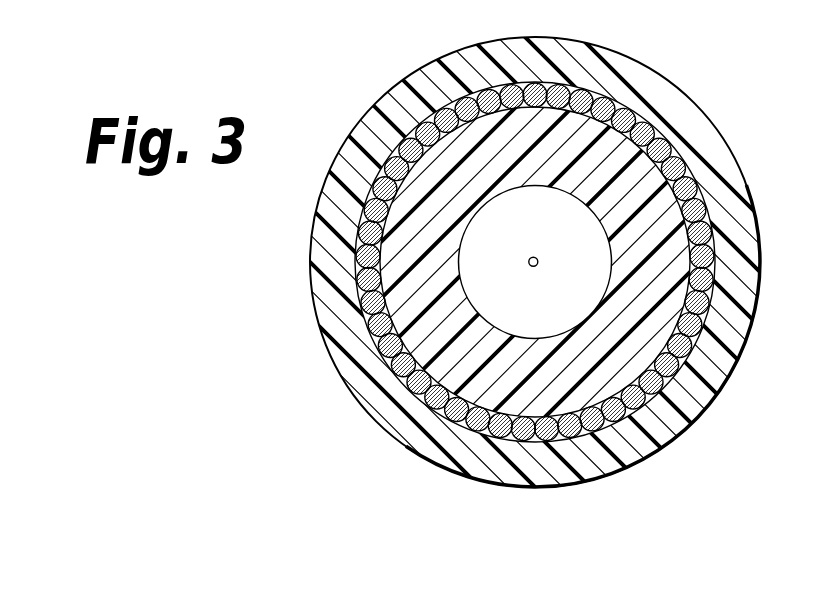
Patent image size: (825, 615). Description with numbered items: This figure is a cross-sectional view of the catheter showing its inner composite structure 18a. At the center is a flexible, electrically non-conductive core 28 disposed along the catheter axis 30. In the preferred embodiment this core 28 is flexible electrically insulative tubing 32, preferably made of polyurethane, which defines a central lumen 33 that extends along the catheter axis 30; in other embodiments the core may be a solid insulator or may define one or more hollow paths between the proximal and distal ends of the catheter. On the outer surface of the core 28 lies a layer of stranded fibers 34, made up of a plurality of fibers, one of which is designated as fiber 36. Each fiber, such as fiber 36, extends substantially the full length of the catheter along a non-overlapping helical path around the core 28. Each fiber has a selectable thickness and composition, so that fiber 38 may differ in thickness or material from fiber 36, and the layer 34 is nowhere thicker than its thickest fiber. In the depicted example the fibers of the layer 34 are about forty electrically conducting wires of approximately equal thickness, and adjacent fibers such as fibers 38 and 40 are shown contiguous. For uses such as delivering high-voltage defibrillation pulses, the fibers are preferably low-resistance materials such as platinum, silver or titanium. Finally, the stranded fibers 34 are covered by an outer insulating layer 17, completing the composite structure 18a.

The inner composite structure 18a is at (705, 87).
The insulating layer 17 is at (388, 432).
The central flexible, electrically non-conductive core 28 is at (628, 370).
The catheter axis 30 is at (538, 261).
The electrically insulative tubing 32 is at (662, 213).
The central lumen 33 is at (518, 300).
The layer of stranded fibers 34 is at (678, 347).
The fiber 36 is at (546, 433).
The fiber 38 is at (388, 343).
The fiber 40 is at (371, 322).